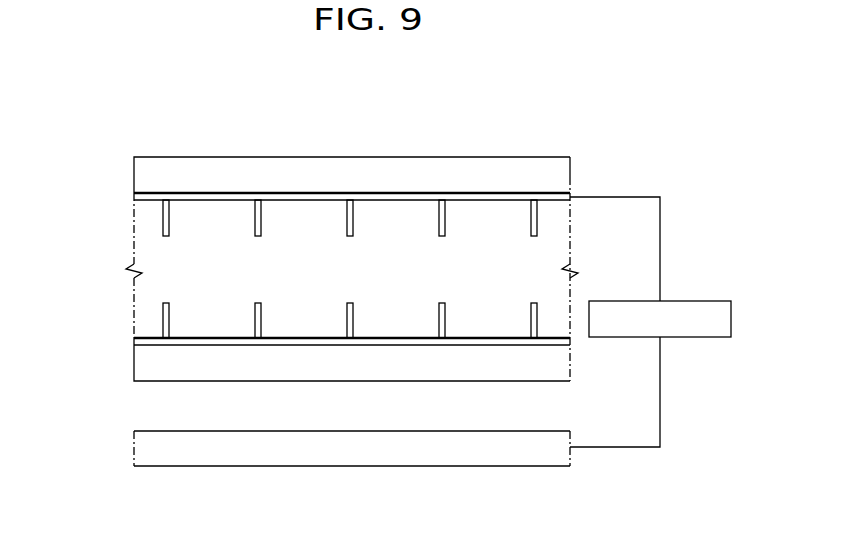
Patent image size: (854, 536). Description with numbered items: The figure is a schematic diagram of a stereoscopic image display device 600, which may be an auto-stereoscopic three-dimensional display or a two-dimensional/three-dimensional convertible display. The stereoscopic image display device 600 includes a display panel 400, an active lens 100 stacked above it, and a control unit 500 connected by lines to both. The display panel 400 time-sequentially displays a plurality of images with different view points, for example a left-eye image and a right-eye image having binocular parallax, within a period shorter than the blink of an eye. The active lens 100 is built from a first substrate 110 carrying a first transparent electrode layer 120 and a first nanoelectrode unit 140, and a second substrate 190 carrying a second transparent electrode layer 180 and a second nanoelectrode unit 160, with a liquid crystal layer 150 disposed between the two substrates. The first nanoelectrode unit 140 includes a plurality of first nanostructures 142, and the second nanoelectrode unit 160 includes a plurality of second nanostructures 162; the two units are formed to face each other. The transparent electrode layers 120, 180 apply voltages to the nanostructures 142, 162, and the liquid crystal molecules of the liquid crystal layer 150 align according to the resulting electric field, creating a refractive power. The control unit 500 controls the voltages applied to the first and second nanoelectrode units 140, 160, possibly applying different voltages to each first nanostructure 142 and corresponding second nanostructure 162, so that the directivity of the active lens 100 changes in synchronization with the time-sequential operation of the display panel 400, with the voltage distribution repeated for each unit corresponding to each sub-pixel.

The stereoscopic image display device 600 is at (107, 125).
The active lens 100 is at (578, 158).
The second substrate 190 is at (138, 172).
The second transparent electrode layer 180 is at (138, 197).
The second nanoelectrode unit 160 is at (160, 222).
The second nanostructure 162 is at (170, 222).
The liquid crystal layer 150 is at (138, 287).
The first nanoelectrode unit 140 is at (160, 320).
The first nanostructure 142 is at (170, 320).
The first transparent electrode layer 120 is at (138, 343).
The first substrate 110 is at (138, 368).
The display panel 400 is at (137, 448).
The control unit 500 is at (687, 300).